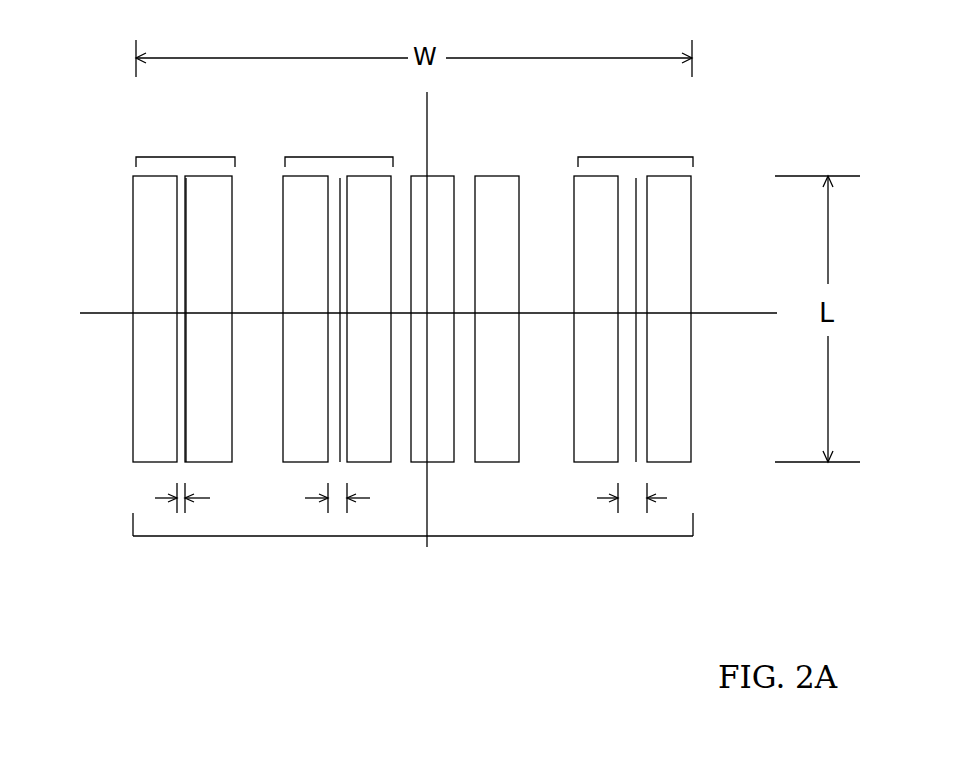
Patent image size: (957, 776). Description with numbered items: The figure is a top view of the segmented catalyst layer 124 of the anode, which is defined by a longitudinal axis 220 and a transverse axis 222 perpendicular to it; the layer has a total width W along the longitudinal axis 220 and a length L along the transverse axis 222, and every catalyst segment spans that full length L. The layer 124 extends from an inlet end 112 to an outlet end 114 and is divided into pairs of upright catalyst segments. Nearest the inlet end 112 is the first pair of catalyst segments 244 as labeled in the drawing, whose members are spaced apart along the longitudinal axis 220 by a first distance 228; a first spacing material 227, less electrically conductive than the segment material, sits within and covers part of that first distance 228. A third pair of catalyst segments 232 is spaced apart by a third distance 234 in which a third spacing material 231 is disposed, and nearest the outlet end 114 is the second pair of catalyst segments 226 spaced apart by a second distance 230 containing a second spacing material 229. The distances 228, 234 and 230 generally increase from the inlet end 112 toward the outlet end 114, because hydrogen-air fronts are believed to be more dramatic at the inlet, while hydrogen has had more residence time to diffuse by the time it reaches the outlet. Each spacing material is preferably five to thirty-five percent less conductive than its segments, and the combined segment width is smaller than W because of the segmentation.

The inlet end 112 is at (122, 383).
The outlet end 114 is at (710, 376).
The segmented catalyst layer 124 is at (383, 541).
The longitudinal axis 220 is at (744, 311).
The transverse axis 222 is at (434, 150).
The second pair of catalyst segments 226 is at (633, 292).
The first spacing material 227 is at (186, 180).
The first distance 228 is at (182, 510).
The second spacing material 229 is at (636, 180).
The second distance 230 is at (632, 510).
The third spacing material 231 is at (340, 180).
The third pair of catalyst segments 232 is at (338, 292).
The third distance 234 is at (339, 510).
The first pair of strips 244 is at (184, 292).